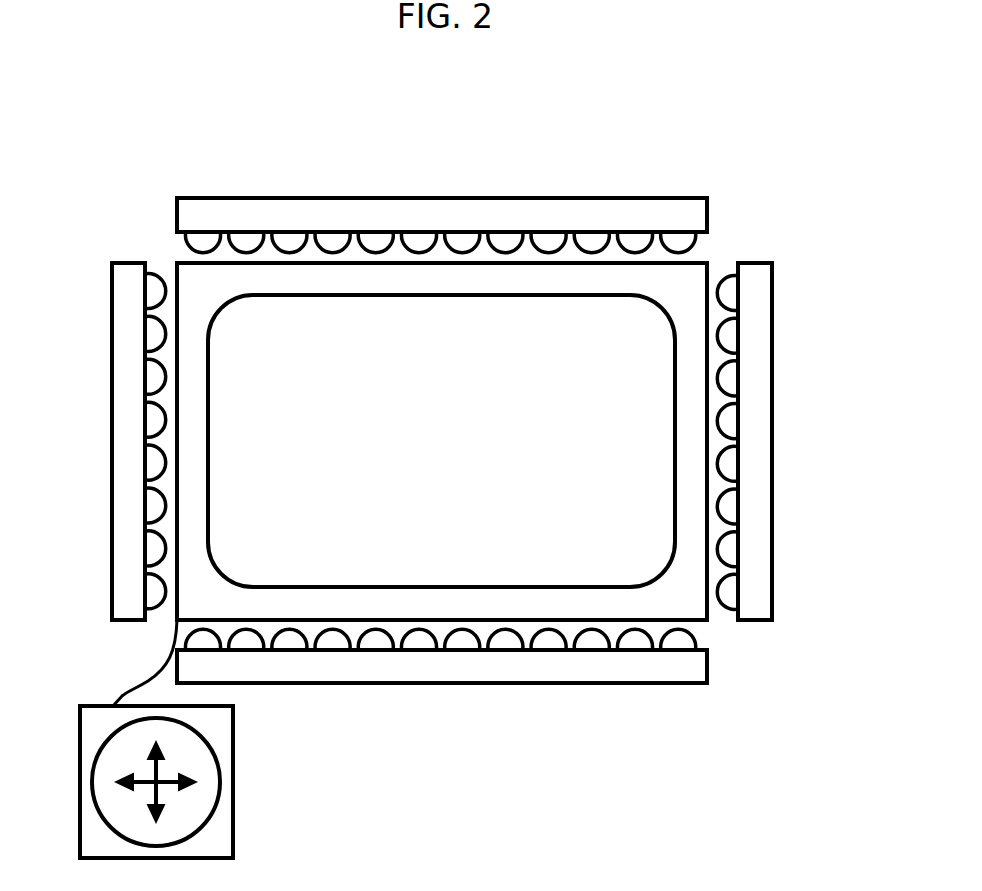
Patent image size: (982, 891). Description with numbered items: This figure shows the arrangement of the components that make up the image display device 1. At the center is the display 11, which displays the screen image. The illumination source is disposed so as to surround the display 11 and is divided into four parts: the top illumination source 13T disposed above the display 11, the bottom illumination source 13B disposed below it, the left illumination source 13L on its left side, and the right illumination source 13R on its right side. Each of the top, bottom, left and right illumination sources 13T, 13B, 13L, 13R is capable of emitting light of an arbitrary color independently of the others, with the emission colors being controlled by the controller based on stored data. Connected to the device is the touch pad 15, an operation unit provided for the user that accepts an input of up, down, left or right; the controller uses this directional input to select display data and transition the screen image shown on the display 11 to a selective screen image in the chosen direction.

The image display device 1 is at (787, 135).
The display 11 is at (707, 270).
The top illumination source 13T is at (603, 198).
The bottom illumination source 13B is at (592, 683).
The left illumination source 13L is at (112, 348).
The right illumination source 13R is at (772, 400).
The touch pad 15 is at (233, 795).